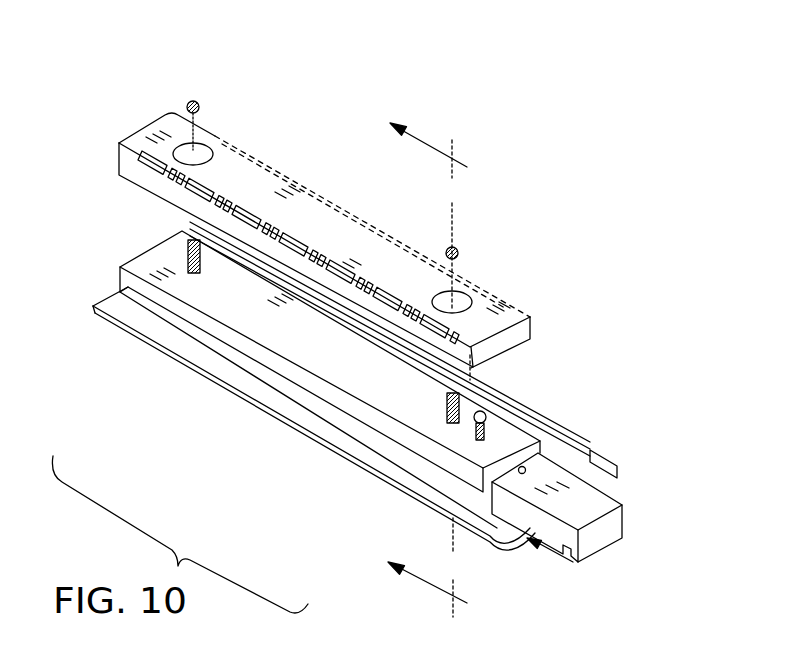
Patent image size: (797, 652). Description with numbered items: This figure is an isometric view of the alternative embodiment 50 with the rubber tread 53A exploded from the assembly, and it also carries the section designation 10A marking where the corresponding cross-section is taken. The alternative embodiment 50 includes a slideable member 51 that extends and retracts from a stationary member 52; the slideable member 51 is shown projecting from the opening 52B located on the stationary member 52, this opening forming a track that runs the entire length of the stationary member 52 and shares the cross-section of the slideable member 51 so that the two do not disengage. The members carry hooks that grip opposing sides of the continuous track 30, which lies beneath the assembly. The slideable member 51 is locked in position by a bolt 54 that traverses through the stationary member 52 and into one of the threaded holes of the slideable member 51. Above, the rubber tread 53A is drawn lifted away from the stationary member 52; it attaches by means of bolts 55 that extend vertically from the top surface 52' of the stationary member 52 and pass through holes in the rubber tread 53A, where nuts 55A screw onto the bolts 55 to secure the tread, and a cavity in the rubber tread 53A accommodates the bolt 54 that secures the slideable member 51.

The alternative embodiment 50 is at (241, 132).
The rubber tread 53A is at (510, 308).
The nuts 55A is at (191, 102).
The cross-section line (FIG. 10A) 10A is at (415, 357).
The top surface 52' is at (325, 330).
The stationary member 52 is at (282, 379).
The continuous track 30 is at (95, 316).
The bolts 55 is at (447, 407).
The bolt 54 is at (490, 416).
The slideable member 51 is at (618, 502).
The opening 52B is at (553, 471).